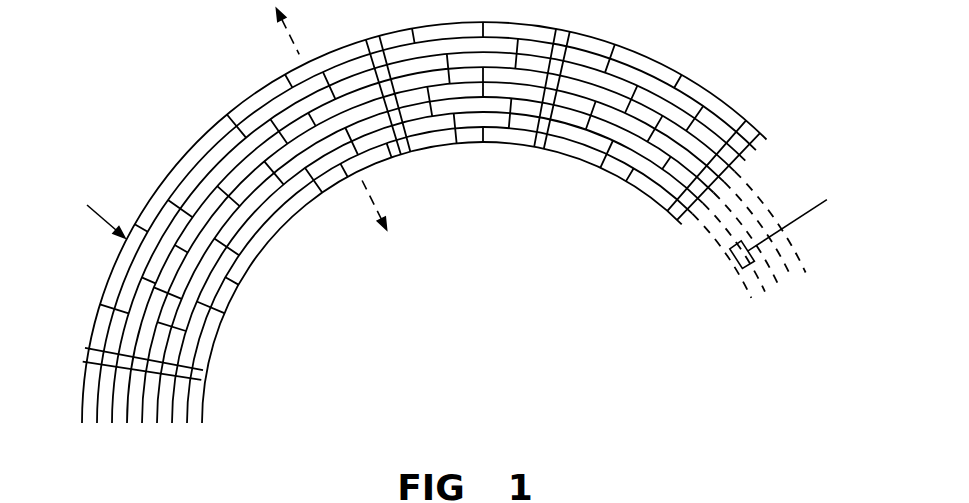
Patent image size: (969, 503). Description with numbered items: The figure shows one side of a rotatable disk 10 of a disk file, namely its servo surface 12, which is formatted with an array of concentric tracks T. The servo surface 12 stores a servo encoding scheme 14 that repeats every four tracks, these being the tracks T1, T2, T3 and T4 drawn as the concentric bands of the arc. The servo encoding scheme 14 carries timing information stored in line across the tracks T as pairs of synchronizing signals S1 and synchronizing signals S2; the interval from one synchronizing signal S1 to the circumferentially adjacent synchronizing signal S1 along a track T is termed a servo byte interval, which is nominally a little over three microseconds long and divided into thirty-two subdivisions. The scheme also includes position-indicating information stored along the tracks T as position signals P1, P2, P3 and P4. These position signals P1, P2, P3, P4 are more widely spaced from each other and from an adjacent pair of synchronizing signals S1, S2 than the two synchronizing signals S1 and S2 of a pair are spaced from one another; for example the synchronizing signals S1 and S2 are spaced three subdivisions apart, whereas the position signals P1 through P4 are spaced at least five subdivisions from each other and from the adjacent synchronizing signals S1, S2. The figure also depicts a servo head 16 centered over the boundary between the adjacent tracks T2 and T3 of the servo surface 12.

The rotatable disk 10 is at (645, 57).
The servo surface 12 is at (557, 255).
The servo encoding scheme 14 is at (128, 230).
The servo head 16 is at (746, 248).
The concentric tracks T is at (98, 210).
The synchronizing signals S1 is at (196, 160).
The synchronizing signals S2 is at (192, 147).
The position signal P1 is at (227, 344).
The position signal P2 is at (239, 319).
The position signal P3 is at (251, 293).
The position signal P4 is at (269, 267).
The track T1 is at (87, 423).
The track T2 is at (102, 423).
The track T3 is at (117, 423).
The track T4 is at (132, 423).